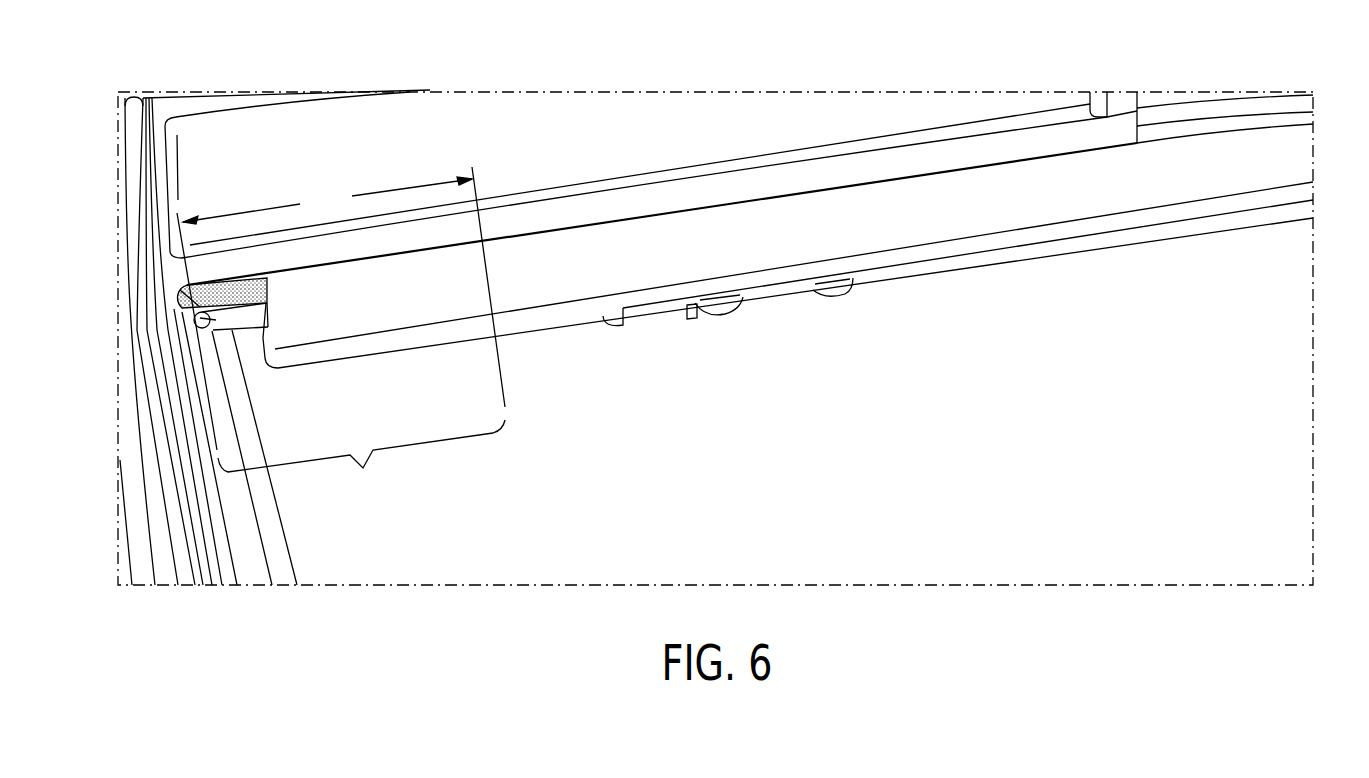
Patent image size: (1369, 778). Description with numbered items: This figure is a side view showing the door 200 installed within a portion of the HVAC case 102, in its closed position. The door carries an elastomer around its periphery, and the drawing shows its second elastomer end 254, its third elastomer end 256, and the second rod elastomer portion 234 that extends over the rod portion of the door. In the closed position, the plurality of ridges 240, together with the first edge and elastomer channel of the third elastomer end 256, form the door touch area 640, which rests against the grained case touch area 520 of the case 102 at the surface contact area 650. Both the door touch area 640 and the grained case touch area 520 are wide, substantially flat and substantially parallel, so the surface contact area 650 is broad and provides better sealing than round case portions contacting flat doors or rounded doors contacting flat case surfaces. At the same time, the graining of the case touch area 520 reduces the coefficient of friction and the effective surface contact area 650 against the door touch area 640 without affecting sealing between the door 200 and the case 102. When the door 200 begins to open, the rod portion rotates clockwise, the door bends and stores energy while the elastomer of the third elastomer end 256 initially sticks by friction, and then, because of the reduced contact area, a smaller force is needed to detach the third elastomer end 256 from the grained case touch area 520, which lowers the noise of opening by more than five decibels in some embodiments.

The case 102 is at (438, 110).
The door 200 is at (1290, 163).
The second rod elastomer portion 234 is at (968, 272).
The plurality of ridges 240 is at (197, 321).
The second elastomer end 254 is at (630, 275).
The third elastomer end 256 is at (267, 338).
The grained case touch area 520 is at (183, 306).
The door touch area 640 is at (361, 461).
The surface contact area 650 is at (341, 308).